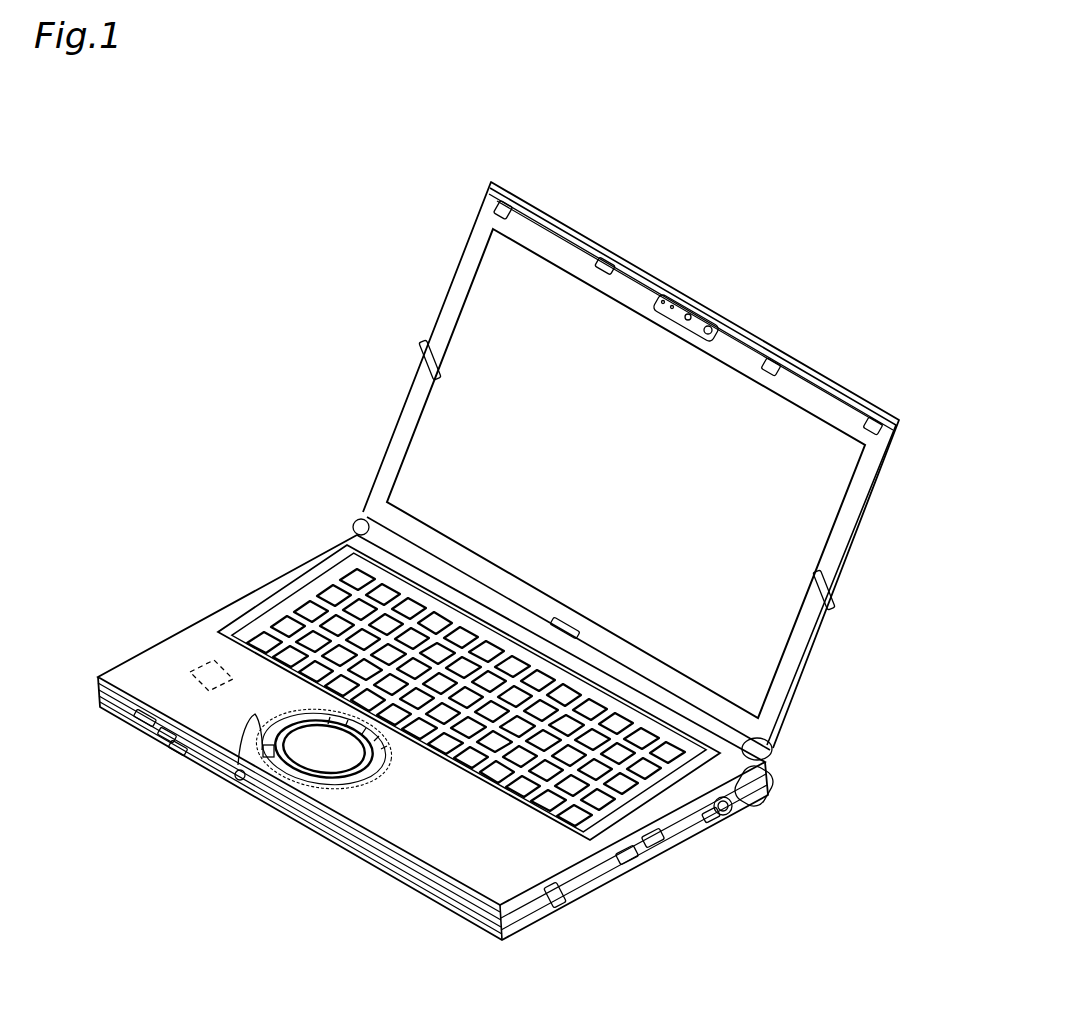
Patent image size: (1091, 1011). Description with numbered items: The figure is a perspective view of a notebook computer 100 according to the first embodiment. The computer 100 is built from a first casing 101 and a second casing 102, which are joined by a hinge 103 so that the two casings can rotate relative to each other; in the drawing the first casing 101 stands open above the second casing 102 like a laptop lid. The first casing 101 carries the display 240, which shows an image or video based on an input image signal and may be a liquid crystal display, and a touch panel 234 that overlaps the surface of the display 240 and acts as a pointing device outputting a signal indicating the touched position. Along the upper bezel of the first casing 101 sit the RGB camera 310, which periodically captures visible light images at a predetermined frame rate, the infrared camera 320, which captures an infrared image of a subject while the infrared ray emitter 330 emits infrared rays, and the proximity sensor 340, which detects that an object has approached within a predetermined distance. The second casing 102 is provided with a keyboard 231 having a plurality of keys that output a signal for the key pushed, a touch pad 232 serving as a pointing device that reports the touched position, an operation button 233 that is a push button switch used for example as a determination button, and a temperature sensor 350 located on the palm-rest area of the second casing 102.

The computer 100 is at (264, 176).
The first casing 101 is at (848, 388).
The second casing 102 is at (603, 883).
The hinge 103 is at (773, 765).
The keyboard 231 is at (293, 600).
The touch pad 232 is at (311, 752).
The operation button 233 is at (271, 757).
The touch panel 234 is at (452, 466).
The display 240 is at (468, 357).
The RGB camera 310 is at (707, 327).
The infrared camera 320 is at (688, 310).
The infrared ray emitter 330 is at (677, 285).
The proximity sensor 340 is at (661, 282).
The temperature sensor 350 is at (203, 653).